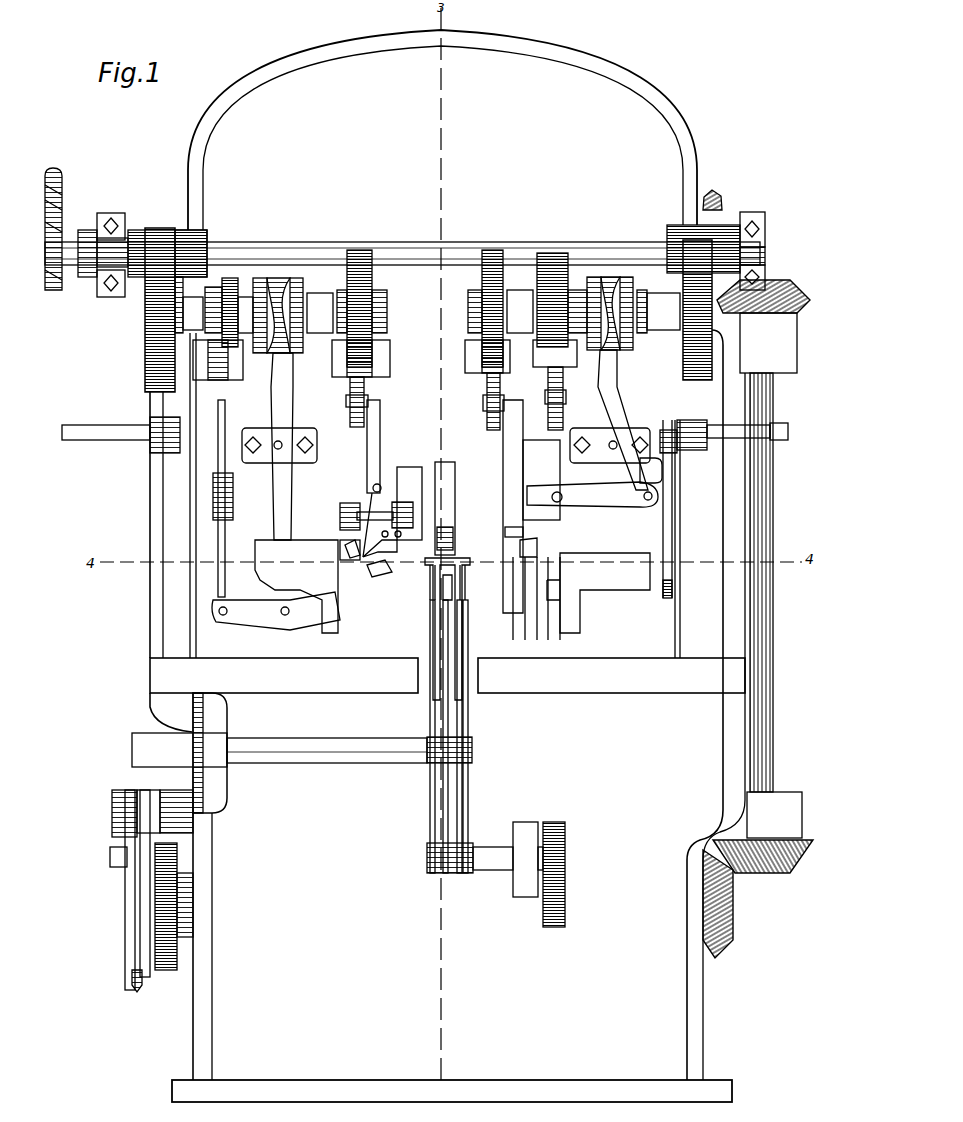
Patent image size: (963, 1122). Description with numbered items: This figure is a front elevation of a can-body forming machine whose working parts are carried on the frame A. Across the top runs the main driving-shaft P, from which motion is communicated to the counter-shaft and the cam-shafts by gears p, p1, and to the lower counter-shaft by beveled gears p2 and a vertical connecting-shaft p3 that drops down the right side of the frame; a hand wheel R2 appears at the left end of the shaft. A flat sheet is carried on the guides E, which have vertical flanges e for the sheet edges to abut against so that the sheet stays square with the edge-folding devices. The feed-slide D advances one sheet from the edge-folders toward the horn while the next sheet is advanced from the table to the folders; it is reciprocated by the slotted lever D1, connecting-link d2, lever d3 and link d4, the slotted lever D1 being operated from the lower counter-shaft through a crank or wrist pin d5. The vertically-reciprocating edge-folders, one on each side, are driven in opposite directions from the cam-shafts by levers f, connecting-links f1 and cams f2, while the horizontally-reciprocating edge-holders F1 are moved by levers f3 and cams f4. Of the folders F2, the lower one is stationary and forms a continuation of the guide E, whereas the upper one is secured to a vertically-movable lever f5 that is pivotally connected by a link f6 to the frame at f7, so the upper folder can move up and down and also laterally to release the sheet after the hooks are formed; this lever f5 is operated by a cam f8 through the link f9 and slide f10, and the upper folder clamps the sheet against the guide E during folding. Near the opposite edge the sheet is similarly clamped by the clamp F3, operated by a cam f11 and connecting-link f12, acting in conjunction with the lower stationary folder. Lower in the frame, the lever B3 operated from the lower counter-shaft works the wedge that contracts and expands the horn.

The frame A is at (447, 566).
The main driving-shaft P is at (444, 242).
The hand wheel R2 is at (62, 192).
The gear p is at (140, 232).
The gear p1 is at (188, 236).
The beveled gear p2 is at (712, 200).
The vertical connecting-shaft p3 is at (778, 492).
The cam f2 is at (226, 284).
The cam f4 is at (278, 288).
The cam f8 is at (362, 252).
The cam f11 is at (497, 298).
The link f9 is at (362, 388).
The connecting-link f12 is at (498, 405).
The connecting-link f1 is at (512, 426).
The lever f3 is at (268, 495).
The lever f is at (572, 507).
The guide E is at (340, 597).
The horizontally-reciprocating edge-holder F1 is at (574, 572).
The folder F2 is at (388, 574).
The clamp F3 is at (505, 532).
The vertical flange e is at (345, 552).
The vertically-movable lever f5 is at (422, 500).
The link f6 is at (388, 550).
The pivot on frame f7 is at (410, 536).
The slide f10 is at (380, 472).
The feed-slide D is at (432, 595).
The link d4 is at (460, 590).
The lever d3 is at (102, 775).
The lever B3 is at (452, 786).
The connecting-link d2 is at (137, 810).
The crank or wrist pin d5 is at (110, 856).
The slotted lever D1 is at (125, 890).